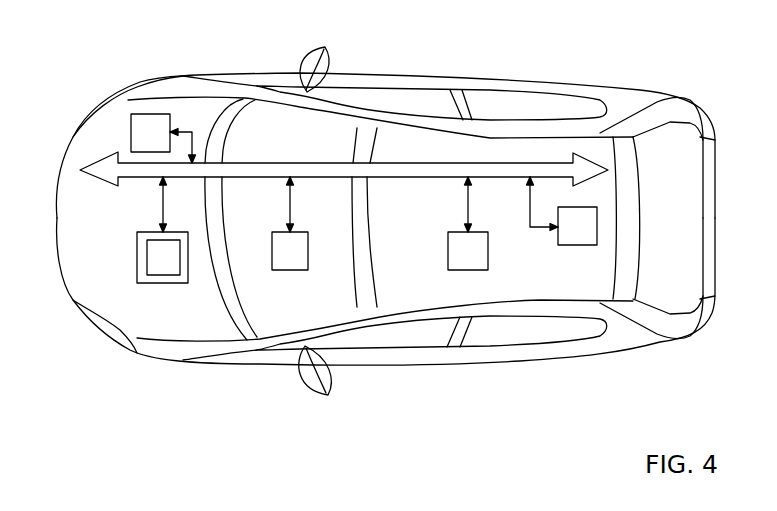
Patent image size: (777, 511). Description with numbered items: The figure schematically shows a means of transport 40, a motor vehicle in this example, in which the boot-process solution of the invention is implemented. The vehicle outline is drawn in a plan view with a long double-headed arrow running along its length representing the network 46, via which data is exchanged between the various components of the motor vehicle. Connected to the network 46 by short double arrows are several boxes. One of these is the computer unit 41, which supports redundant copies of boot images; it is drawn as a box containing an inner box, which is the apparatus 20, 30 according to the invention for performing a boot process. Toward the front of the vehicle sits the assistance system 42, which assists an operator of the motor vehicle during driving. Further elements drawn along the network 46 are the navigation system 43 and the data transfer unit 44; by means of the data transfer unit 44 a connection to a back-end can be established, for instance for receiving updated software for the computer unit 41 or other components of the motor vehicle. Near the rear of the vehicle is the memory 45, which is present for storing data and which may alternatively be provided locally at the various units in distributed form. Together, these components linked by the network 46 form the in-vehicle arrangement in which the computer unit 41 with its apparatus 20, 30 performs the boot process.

The means of transport 40 is at (617, 83).
The computer unit 41 is at (106, 304).
The assistance system 42 is at (152, 114).
The navigation system 43 is at (288, 270).
The data transfer unit 44 is at (467, 270).
The memory 45 is at (577, 245).
The network 46 is at (505, 170).
The apparatus 20 is at (102, 315).
The apparatus 30 is at (147, 265).